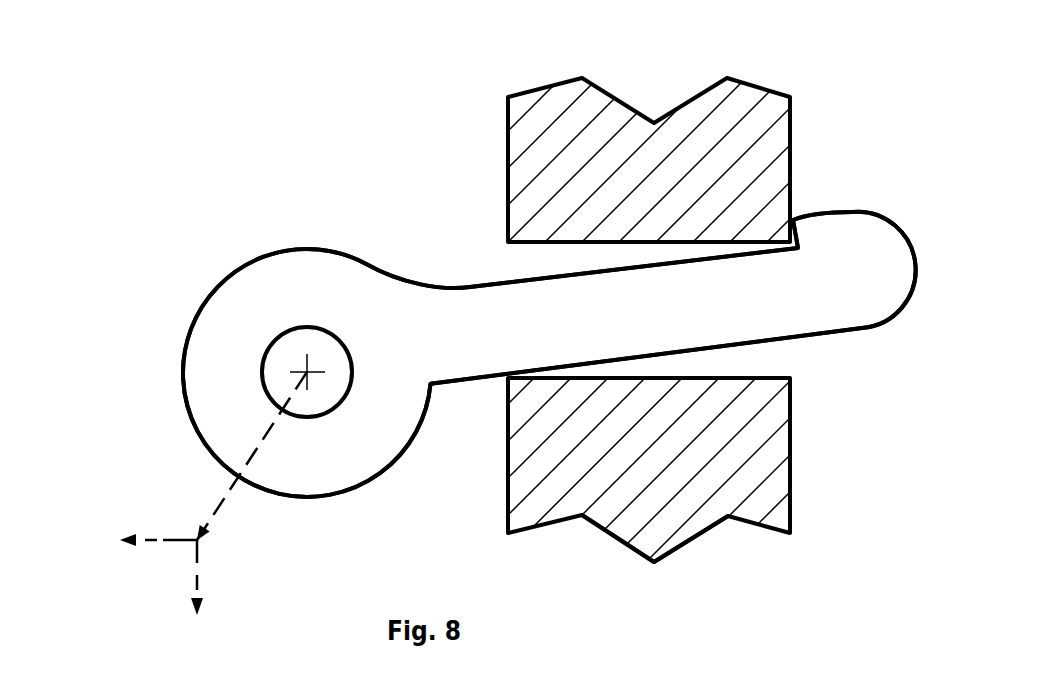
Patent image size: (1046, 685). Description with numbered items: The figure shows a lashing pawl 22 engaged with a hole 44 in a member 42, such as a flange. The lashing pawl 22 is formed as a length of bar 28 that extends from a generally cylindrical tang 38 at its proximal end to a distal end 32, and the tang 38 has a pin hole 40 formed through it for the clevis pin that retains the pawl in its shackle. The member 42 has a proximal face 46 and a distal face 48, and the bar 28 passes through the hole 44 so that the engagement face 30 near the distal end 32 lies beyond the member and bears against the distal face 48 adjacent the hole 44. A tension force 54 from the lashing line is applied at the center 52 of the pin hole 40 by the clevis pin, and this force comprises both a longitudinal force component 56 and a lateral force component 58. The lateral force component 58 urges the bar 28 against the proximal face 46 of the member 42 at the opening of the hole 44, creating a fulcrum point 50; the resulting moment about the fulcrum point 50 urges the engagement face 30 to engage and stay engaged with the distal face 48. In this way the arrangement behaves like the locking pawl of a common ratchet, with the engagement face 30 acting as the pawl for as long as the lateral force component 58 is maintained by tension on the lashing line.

The lashing pawl 22 is at (381, 216).
The bar 28 is at (493, 284).
The engagement face 30 is at (797, 231).
The distal end 32 is at (917, 265).
The tang 38 is at (222, 282).
The pin hole 40 is at (332, 335).
The member 42 is at (695, 95).
The hole 44 is at (785, 377).
The proximal face 46 is at (508, 132).
The distal face 48 is at (792, 138).
The fulcrum point 50 is at (490, 388).
The center of the pin hole 52 is at (305, 367).
The tension force 54 is at (225, 502).
The longitudinal force component 56 is at (177, 540).
The lateral force component 58 is at (198, 560).